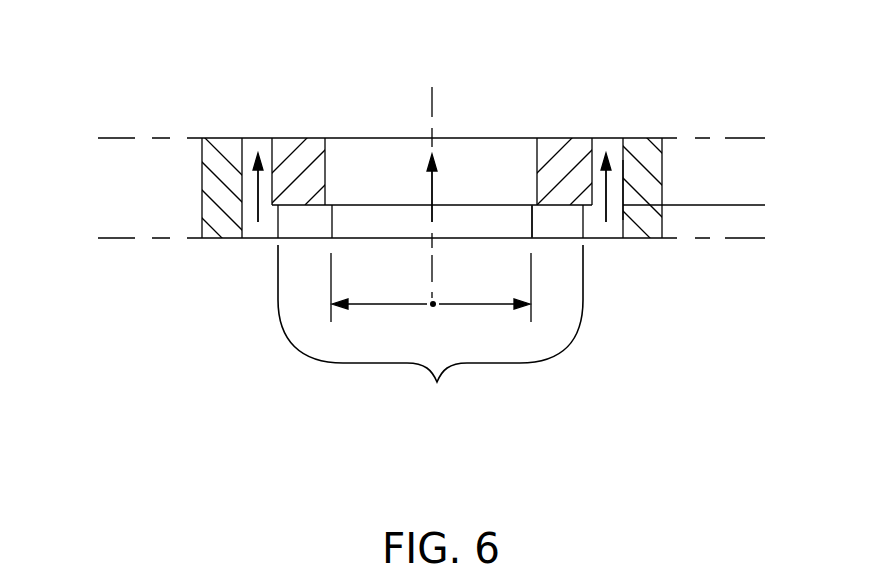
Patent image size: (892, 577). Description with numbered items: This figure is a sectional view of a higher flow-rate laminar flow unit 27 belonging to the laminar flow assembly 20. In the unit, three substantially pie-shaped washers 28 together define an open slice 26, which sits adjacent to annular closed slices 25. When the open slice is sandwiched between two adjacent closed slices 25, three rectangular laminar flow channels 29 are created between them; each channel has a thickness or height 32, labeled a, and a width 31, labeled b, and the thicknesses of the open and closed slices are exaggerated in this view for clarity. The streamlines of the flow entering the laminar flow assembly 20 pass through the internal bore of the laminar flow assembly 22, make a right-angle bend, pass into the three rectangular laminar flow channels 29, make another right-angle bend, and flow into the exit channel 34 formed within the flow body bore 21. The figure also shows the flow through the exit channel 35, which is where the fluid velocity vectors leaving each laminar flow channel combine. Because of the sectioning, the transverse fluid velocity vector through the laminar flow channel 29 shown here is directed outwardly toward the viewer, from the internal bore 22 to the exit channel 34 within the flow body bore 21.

The laminar flow assembly 20 is at (434, 185).
The flow body bore 21 is at (630, 191).
The internal bore of laminar flow assembly 22 is at (326, 168).
The annular closed slice 25 is at (564, 138).
The open slice 26 is at (430, 329).
The laminar flow unit 27 is at (438, 124).
The pie-shaped washer 28 is at (307, 240).
The laminar flow channel 29 is at (532, 226).
The width 31 is at (433, 307).
The thickness or height 32 is at (757, 223).
The exit channel 34 is at (255, 240).
The flow through the exit channel 35 is at (622, 194).